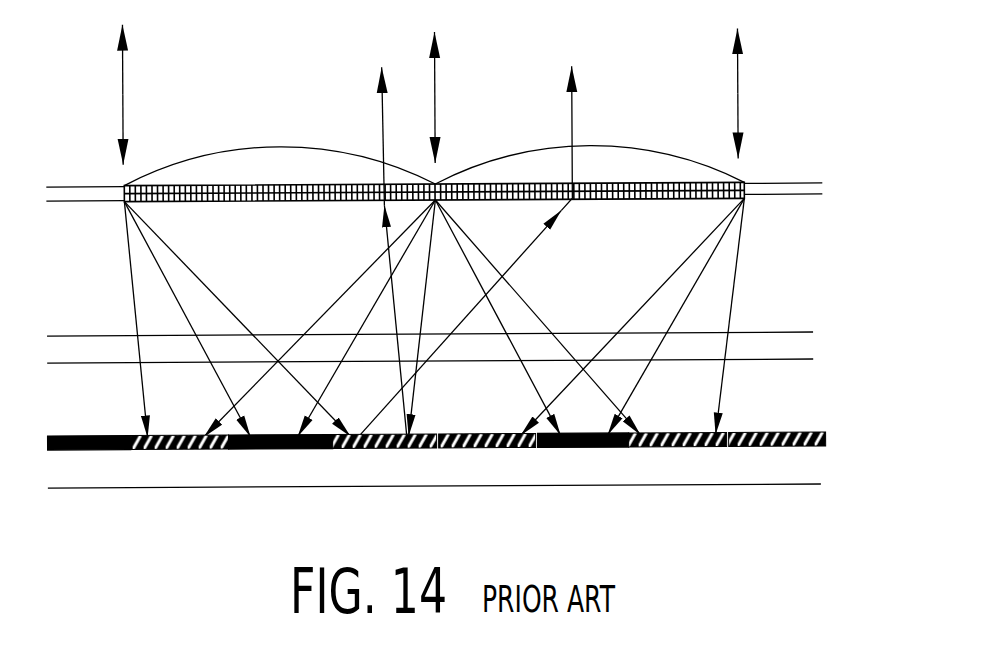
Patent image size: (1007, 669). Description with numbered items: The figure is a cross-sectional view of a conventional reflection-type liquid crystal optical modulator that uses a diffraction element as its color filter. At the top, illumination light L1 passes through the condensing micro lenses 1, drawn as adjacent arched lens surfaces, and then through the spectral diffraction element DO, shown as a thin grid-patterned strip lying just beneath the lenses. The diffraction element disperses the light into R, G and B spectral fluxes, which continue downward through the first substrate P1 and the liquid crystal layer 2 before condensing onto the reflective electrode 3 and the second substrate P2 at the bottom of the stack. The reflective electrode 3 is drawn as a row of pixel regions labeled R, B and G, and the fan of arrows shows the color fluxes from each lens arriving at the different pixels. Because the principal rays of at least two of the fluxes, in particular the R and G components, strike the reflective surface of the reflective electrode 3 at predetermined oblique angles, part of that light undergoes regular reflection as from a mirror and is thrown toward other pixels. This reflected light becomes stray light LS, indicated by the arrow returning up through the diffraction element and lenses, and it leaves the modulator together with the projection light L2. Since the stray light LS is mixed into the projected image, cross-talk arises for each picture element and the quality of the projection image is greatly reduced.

The condensing micro lenses 1 is at (230, 163).
The liquid crystal layer 2 is at (777, 398).
The reflective electrode 3 is at (825, 438).
The illumination light L1 is at (123, 109).
The projection light L2 is at (123, 68).
The stray light LS is at (572, 113).
The spectral diffraction element DO is at (823, 190).
The first substrate P1 is at (810, 348).
The second substrate P2 is at (788, 472).